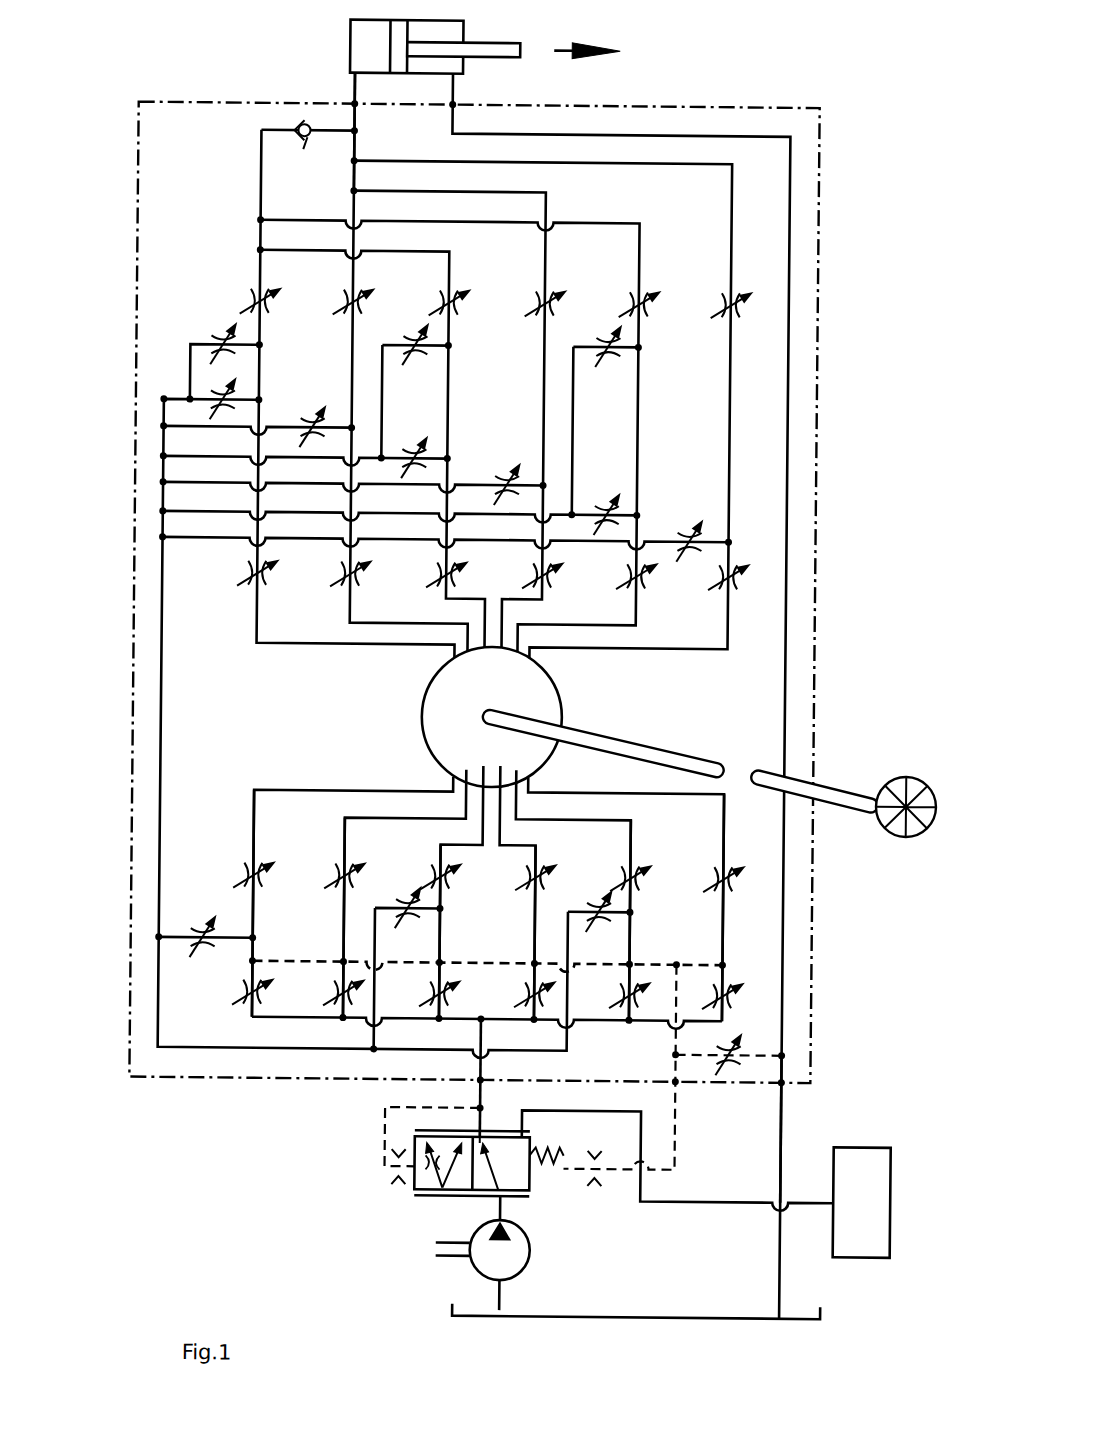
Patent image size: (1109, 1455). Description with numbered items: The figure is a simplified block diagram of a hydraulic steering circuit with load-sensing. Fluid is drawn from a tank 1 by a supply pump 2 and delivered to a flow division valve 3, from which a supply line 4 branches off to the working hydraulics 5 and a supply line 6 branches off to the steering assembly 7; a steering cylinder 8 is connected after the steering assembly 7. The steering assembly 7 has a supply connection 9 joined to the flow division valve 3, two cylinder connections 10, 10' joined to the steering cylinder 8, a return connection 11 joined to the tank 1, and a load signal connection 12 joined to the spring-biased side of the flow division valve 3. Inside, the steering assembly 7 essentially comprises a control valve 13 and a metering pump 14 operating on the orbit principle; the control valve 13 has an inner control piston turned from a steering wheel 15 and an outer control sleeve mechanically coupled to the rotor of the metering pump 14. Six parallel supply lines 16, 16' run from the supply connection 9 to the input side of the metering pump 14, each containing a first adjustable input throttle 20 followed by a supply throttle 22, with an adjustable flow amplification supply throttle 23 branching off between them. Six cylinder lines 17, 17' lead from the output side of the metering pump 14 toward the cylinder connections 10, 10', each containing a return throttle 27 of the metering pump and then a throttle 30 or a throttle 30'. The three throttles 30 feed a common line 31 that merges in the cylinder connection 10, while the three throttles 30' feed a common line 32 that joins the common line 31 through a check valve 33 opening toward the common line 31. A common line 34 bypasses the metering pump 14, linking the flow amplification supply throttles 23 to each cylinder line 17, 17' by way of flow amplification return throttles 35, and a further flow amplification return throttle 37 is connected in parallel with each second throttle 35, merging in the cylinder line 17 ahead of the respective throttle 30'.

The tank 1 is at (603, 1314).
The supply pump 2 is at (528, 1239).
The flow division valve 3 is at (532, 1188).
The supply line 4 is at (571, 1112).
The working hydraulics 5 is at (846, 1142).
The supply line 6 is at (480, 1107).
The steering assembly 7 is at (826, 614).
The steering cylinder 8 is at (470, 24).
The supply connection 9 is at (488, 1077).
The cylinder connection 10 is at (324, 86).
The cylinder connection 10' is at (614, 693).
The return connection 11 is at (788, 1086).
The load signal connection 12 is at (682, 1086).
The control valve 13 is at (337, 757).
The metering pump 14 is at (481, 687).
The steering wheel 15 is at (895, 834).
The supply line 16 is at (463, 905).
The supply line 16' is at (555, 906).
The cylinder line 17 is at (426, 436).
The cylinder line 17' is at (541, 367).
The first adjustable input throttle 20 is at (272, 990).
The supply throttle 22 is at (274, 871).
The flow amplification supply throttle 23 is at (211, 934).
The return throttle 27 is at (249, 576).
The throttle 30 is at (558, 307).
The throttle 30' is at (466, 307).
The common line 31 is at (358, 142).
The common line 32 is at (255, 193).
The check valve 33 is at (308, 149).
The common line 34 is at (165, 720).
The flow amplification return throttle 35 is at (221, 391).
The flow amplification return throttle 37 is at (221, 337).